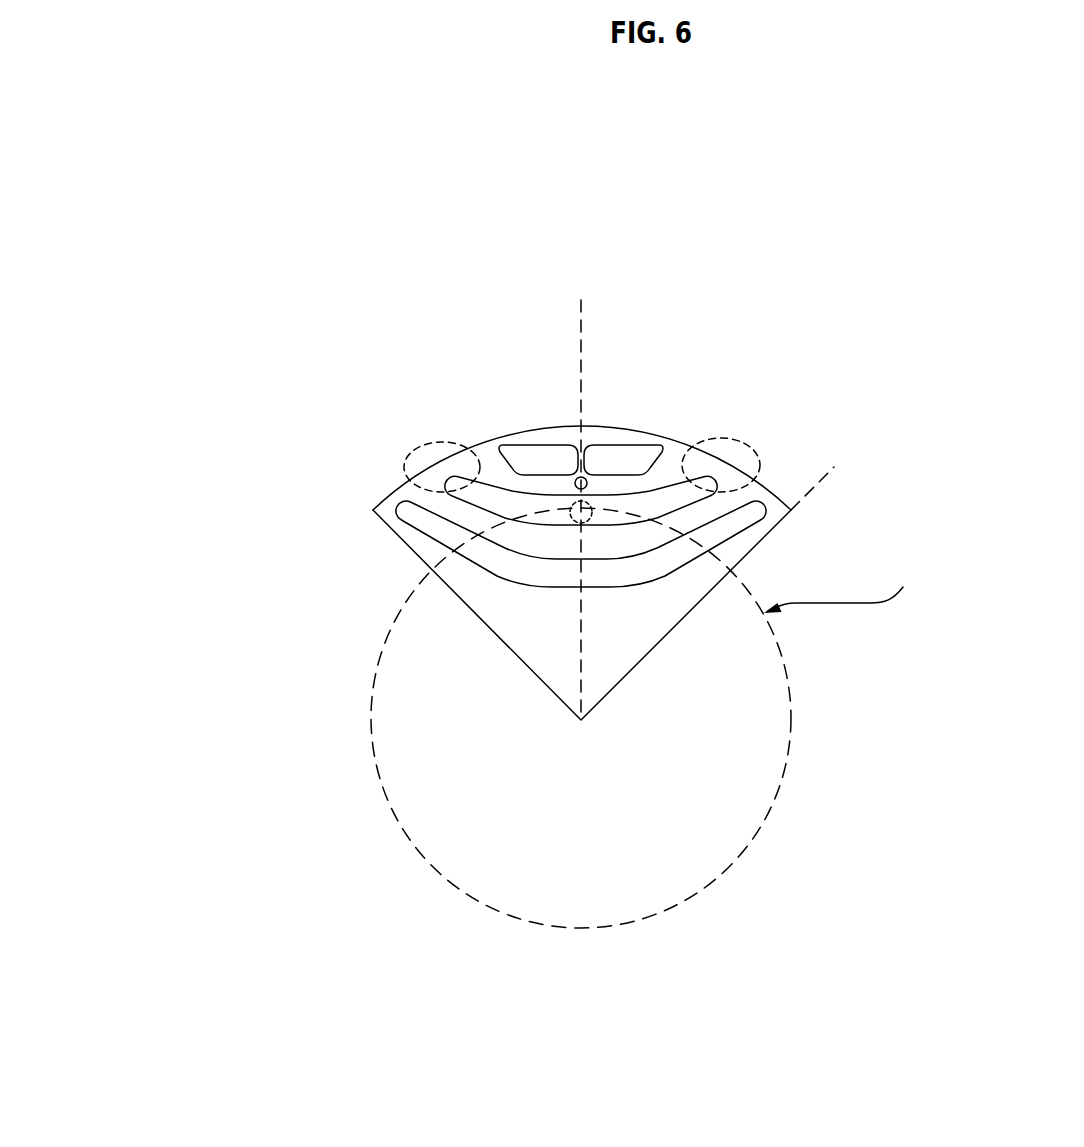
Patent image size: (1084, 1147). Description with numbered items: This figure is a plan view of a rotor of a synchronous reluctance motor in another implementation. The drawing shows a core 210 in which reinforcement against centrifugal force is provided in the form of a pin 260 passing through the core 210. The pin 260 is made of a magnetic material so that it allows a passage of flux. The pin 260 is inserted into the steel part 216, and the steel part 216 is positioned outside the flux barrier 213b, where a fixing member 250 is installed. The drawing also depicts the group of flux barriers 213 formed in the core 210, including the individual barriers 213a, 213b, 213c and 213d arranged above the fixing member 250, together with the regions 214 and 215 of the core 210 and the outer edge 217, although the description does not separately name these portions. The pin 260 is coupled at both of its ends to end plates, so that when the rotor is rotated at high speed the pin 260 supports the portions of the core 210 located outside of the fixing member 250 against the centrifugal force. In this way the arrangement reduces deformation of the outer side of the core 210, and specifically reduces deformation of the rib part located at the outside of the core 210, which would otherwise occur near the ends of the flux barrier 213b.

The core 210 is at (500, 540).
The slots 213 is at (489, 431).
The first slot 213a is at (400, 496).
The flux barrier 213b is at (458, 472).
The third slot 213c is at (520, 458).
The fourth slot 213d is at (571, 393).
The triangular body portion 214 is at (622, 605).
The rib between slots 215 is at (653, 540).
The steel part 216 is at (622, 487).
The outer arc edge 217 is at (618, 437).
The fixing member 250 is at (575, 486).
The pin 260 is at (570, 513).